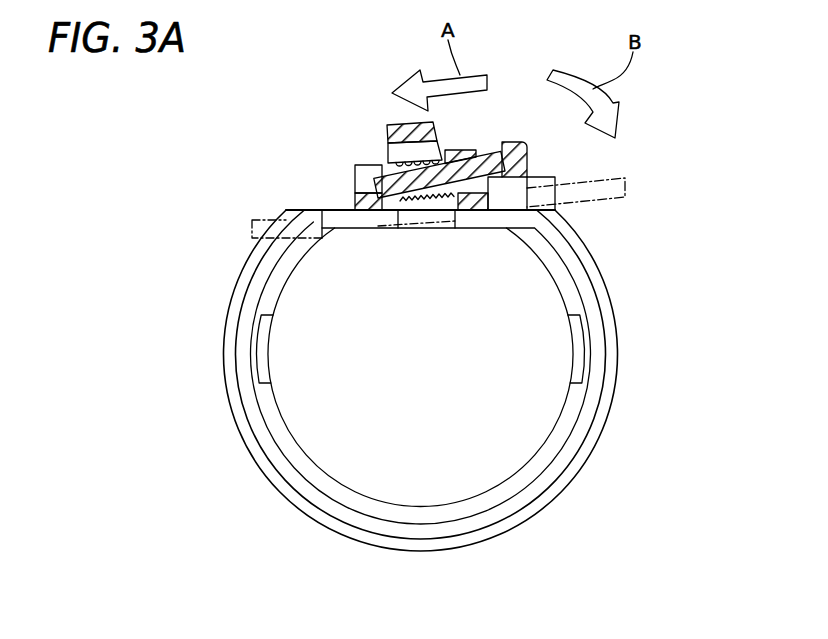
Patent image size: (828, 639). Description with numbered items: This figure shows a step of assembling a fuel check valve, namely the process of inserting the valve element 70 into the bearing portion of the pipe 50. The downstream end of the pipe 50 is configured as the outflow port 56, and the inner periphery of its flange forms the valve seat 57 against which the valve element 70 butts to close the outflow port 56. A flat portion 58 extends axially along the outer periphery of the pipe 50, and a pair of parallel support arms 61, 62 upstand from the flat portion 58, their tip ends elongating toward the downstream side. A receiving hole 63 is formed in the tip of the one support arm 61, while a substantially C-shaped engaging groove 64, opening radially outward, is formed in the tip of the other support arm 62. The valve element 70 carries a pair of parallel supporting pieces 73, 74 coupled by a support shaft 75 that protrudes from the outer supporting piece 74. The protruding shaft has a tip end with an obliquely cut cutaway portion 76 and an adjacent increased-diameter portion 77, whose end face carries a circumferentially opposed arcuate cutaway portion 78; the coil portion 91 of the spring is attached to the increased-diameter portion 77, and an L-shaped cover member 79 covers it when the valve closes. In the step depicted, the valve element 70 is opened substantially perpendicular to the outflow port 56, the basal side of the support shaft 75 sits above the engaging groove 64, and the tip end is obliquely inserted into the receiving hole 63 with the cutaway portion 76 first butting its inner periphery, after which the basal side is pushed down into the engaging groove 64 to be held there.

The pipe 50 is at (180, 367).
The outflow port 56 is at (370, 468).
The valve seat 57 is at (597, 411).
The flat portion 58 is at (270, 232).
The support arm 61 is at (382, 166).
The support arm 62 is at (490, 212).
The receiving hole 63 is at (355, 189).
The engaging groove 64 is at (497, 228).
The valve element 70 is at (637, 185).
The supporting piece 73 is at (527, 165).
The supporting piece 74 is at (460, 210).
The support shaft 75 is at (494, 141).
The cutaway portion 76 is at (390, 230).
The increased-diameter portion 77 is at (470, 150).
The cutaway portion 78 is at (388, 145).
The cover member 79 is at (389, 124).
The coil portion 91 is at (400, 203).